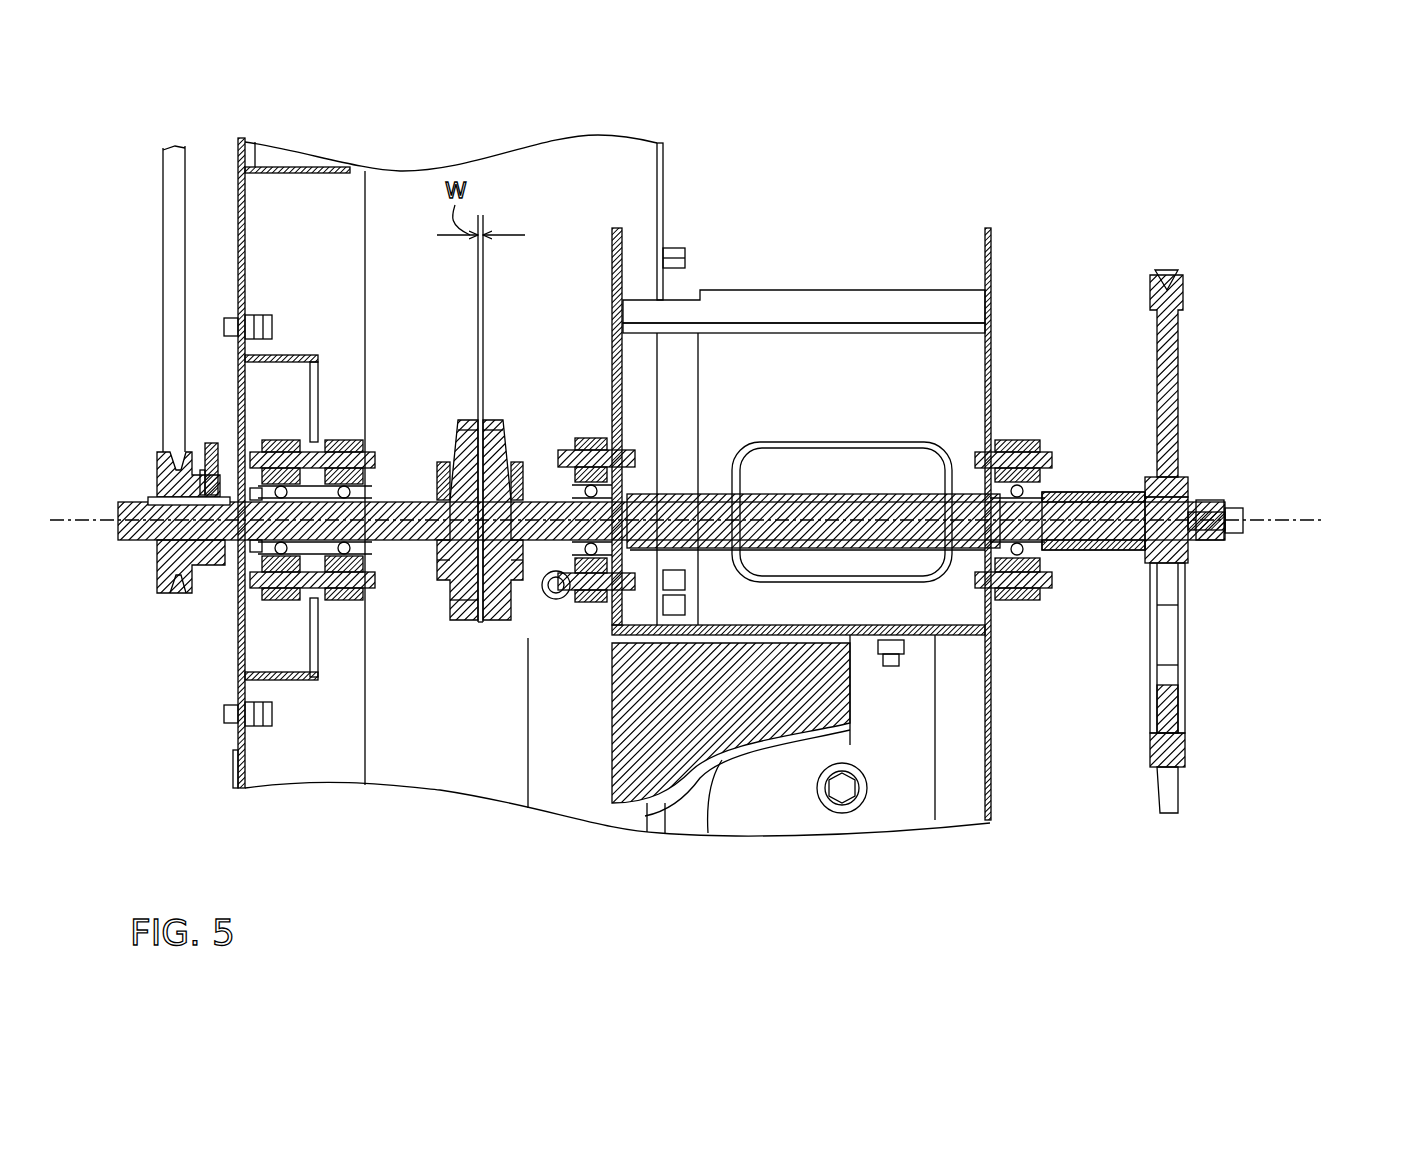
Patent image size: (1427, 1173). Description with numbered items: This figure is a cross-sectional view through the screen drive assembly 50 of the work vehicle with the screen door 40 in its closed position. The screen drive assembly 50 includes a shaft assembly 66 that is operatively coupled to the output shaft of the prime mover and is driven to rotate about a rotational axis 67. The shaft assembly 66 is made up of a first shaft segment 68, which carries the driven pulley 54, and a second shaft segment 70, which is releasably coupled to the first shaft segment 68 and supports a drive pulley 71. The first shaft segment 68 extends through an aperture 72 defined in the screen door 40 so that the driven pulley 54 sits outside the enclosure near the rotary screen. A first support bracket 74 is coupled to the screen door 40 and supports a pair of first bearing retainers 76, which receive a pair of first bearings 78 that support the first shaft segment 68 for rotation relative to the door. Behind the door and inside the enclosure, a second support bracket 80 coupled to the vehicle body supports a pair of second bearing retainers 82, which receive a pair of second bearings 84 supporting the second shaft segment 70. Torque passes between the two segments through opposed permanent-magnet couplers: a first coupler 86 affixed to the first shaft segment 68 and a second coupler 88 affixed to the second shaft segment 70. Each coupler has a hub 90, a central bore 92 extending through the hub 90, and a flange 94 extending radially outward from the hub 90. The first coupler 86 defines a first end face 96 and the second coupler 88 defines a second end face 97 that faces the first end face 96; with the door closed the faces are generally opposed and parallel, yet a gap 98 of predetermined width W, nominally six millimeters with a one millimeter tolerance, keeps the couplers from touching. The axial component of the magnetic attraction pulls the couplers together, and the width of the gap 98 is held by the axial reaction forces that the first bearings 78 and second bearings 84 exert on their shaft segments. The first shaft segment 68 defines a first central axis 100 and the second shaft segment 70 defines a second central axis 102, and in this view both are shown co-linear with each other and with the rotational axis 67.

The screen door 40 is at (238, 672).
The screen drive assembly 50 is at (282, 805).
The driven pulley 54 is at (160, 560).
The shaft assembly 66 is at (708, 662).
The rotational axis 67 is at (1260, 518).
The first shaft segment 68 is at (425, 548).
The second shaft segment 70 is at (895, 503).
The drive pulley 71 is at (1180, 383).
The aperture 72 is at (232, 603).
The first support bracket 74 is at (300, 354).
The first bearing retainers 76 is at (270, 450).
The first bearings 78 is at (252, 485).
The second support bracket 80 is at (800, 308).
The second bearing retainers 82 is at (600, 450).
The second bearings 84 is at (576, 482).
The first coupler 86 is at (460, 440).
The second coupler 88 is at (501, 450).
The hub 90 is at (437, 484).
The central bore 92 is at (440, 580).
The flange 94 is at (462, 420).
The first end face 96 is at (487, 605).
The second end face 97 is at (476, 610).
The gap 98 is at (481, 625).
The first central axis 100 is at (1243, 520).
The second central axis 102 is at (1224, 520).